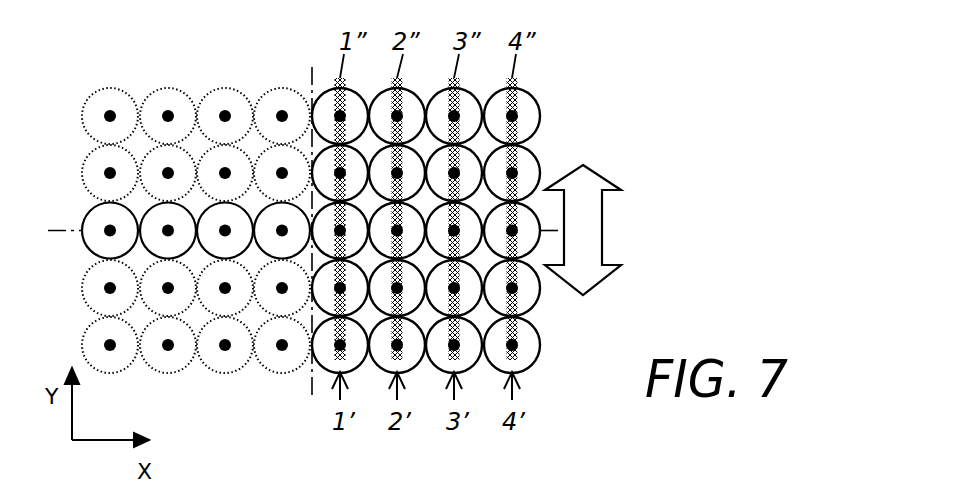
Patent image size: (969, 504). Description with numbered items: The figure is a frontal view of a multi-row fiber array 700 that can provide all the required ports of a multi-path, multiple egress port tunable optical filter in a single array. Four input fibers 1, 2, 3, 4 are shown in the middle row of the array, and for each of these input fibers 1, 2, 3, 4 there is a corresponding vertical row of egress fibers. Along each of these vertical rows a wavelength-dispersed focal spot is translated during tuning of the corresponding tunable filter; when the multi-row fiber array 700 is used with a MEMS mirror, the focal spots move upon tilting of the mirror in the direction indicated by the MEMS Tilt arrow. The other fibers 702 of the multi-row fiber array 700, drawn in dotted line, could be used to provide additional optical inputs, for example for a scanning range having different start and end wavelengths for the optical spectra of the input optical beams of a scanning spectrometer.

The multi-row fiber array 700 is at (620, 72).
The other fibers 702 is at (196, 204).
The input fiber 1 is at (282, 231).
The input fiber 2 is at (225, 231).
The input fiber 3 is at (168, 231).
The input fiber 4 is at (110, 231).